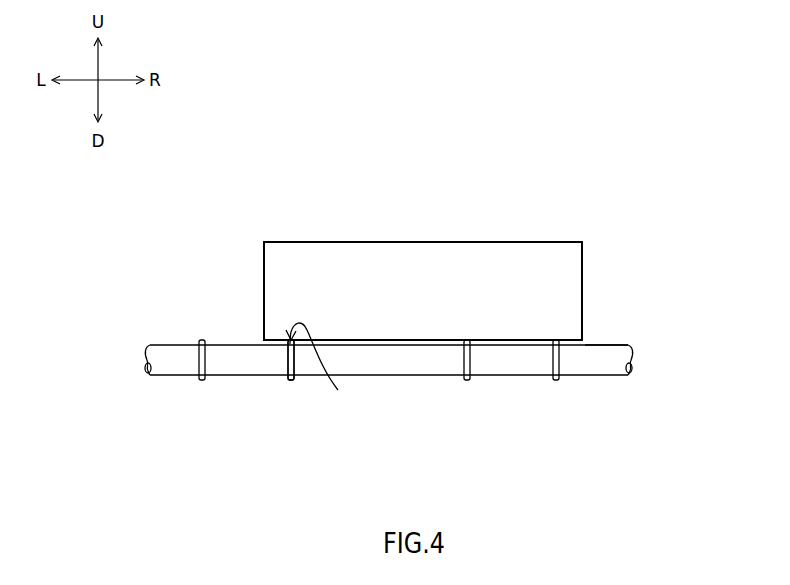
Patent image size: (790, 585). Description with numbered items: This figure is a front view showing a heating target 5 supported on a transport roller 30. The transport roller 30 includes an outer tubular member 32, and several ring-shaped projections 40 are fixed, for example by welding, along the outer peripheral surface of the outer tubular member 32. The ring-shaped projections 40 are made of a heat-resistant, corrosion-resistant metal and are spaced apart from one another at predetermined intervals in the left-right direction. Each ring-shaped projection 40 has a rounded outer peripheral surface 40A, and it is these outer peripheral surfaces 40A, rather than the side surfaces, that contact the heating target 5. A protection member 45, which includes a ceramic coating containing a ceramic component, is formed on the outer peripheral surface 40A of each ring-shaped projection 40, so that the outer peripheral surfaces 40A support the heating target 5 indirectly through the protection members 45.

The heating target 5 is at (534, 262).
The transport roller 30 is at (592, 386).
The outer tubular member 32 is at (603, 347).
The ring-shaped projection 40 is at (287, 390).
The outer peripheral surface 40A is at (287, 360).
The protection member 45 is at (327, 363).